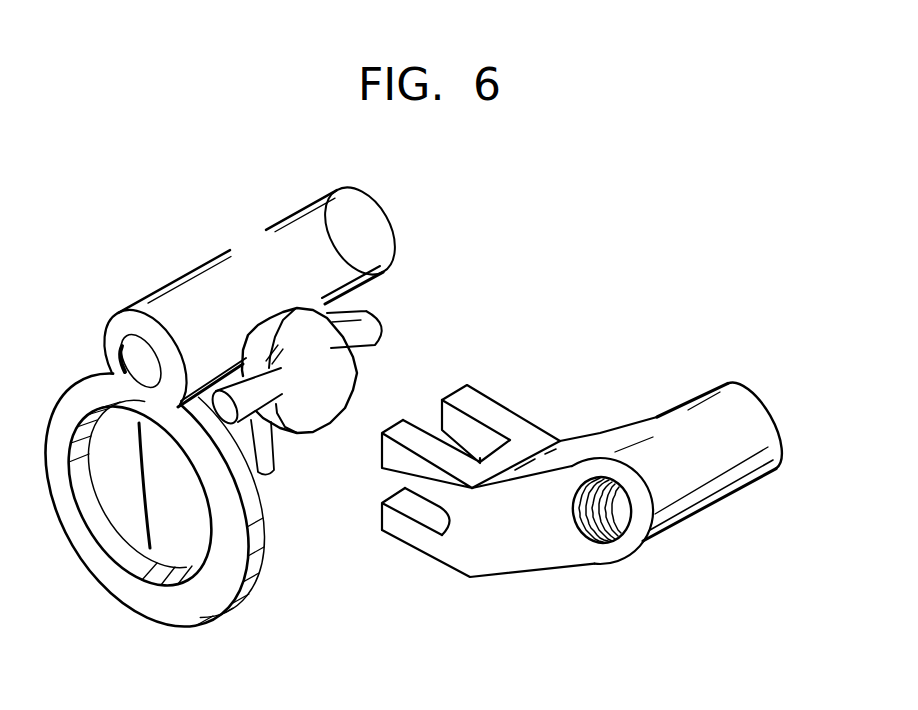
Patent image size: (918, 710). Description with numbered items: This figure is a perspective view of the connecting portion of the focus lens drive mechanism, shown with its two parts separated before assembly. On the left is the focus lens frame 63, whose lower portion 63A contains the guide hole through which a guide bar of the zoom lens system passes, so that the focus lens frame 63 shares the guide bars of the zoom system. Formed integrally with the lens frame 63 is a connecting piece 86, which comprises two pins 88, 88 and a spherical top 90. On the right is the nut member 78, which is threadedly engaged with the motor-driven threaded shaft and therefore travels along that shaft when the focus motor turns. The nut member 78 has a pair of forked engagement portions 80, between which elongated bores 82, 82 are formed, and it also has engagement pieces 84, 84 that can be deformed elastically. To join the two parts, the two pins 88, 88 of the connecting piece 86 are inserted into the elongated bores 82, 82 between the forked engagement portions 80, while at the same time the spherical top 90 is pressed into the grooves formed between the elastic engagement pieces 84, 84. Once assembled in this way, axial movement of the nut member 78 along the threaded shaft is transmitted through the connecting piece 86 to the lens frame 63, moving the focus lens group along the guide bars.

The lens frame 63 is at (163, 605).
The lower portion of the lens frame 63A is at (157, 305).
The nut member 78 is at (707, 529).
The forked engagement portions 80 is at (514, 396).
The elongated bores 82 is at (446, 436).
The engagement pieces 84 is at (477, 400).
The connecting piece 86 is at (266, 294).
The pins 88 is at (362, 320).
The spherical top 90 is at (248, 351).